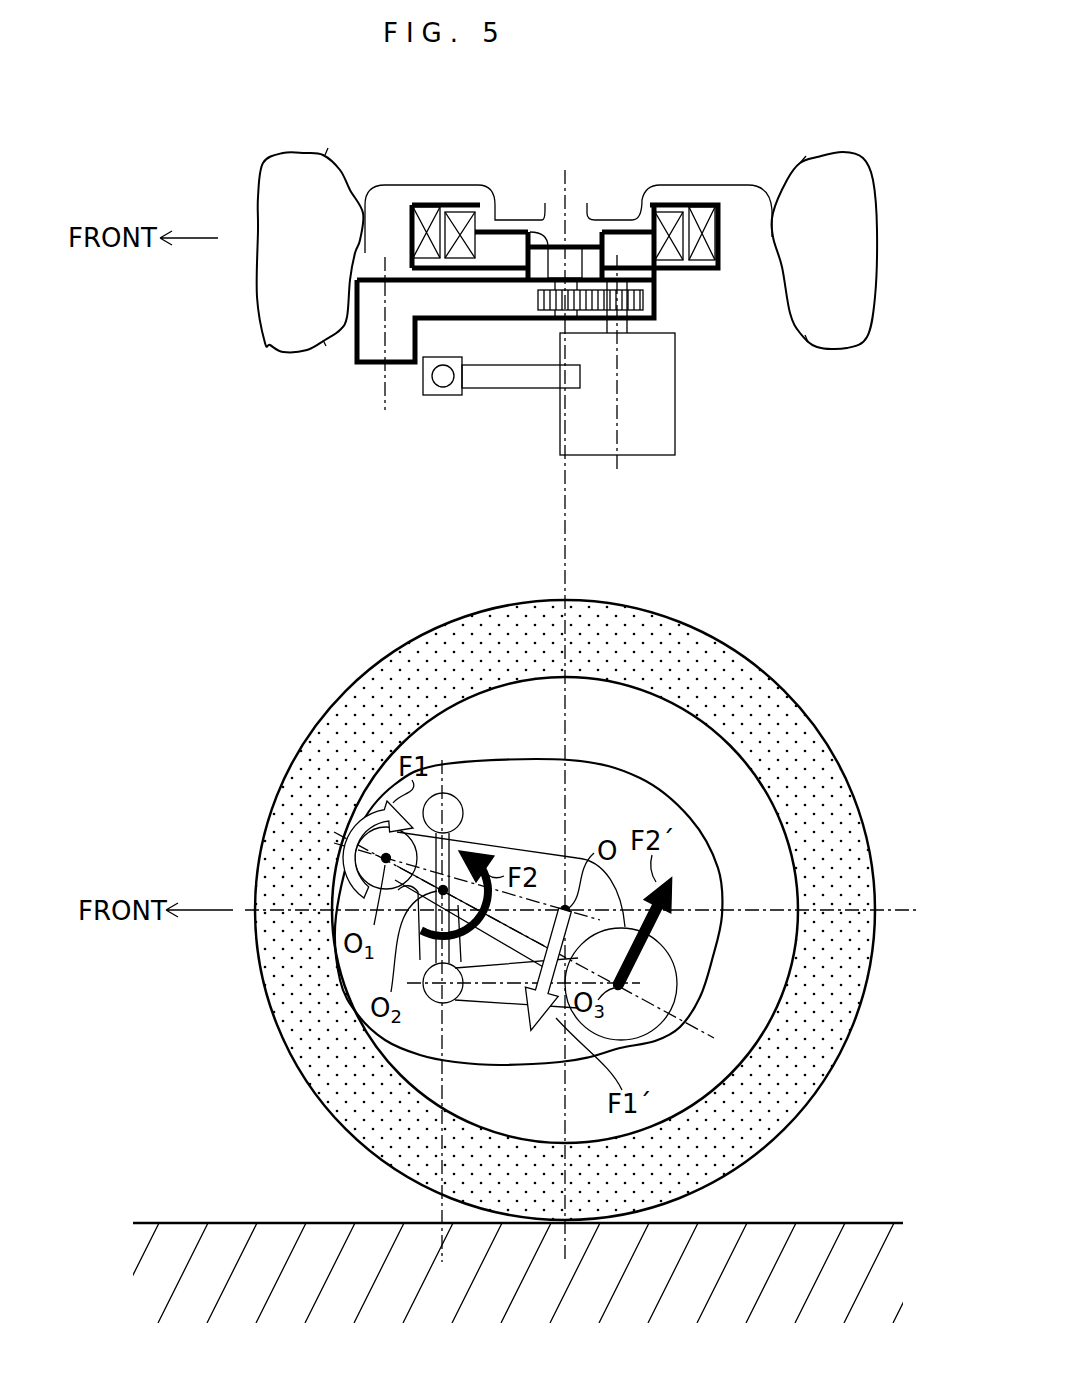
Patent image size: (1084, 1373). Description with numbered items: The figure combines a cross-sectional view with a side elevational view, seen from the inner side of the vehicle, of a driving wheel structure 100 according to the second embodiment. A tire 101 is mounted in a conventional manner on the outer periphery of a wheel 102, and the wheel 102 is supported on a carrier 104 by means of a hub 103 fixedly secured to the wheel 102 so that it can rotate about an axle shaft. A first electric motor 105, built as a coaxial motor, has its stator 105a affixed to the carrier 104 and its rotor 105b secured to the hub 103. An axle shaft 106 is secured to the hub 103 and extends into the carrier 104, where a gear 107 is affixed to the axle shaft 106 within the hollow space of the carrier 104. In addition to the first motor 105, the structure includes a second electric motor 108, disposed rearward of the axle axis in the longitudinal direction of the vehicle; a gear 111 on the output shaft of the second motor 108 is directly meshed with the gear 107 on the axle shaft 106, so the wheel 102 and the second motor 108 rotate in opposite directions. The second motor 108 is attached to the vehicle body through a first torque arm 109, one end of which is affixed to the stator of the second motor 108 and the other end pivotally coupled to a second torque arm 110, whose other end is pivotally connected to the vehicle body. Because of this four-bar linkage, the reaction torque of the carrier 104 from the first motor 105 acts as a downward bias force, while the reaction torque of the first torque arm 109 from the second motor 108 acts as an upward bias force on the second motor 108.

The driving wheel structure 100 is at (237, 135).
The tire 101 is at (275, 350).
The wheel 102 is at (400, 186).
The hub 103 is at (587, 217).
The carrier 104 is at (355, 345).
The first electric motor 105 is at (643, 257).
The stator 105a is at (430, 205).
The rotor 105b is at (458, 212).
The axle shaft 106 is at (558, 322).
The gear 107 is at (538, 300).
The second electric motor 108 is at (675, 428).
The first torque arm 109 is at (510, 388).
The second torque arm 110 is at (445, 395).
The gear 111 is at (645, 300).